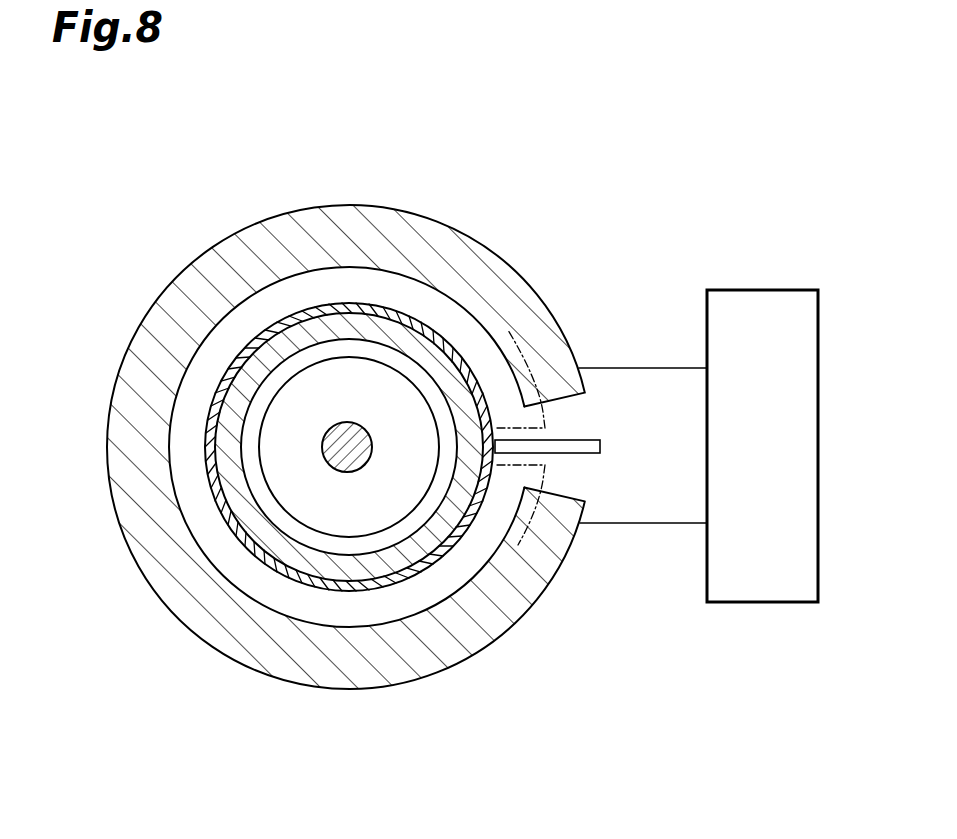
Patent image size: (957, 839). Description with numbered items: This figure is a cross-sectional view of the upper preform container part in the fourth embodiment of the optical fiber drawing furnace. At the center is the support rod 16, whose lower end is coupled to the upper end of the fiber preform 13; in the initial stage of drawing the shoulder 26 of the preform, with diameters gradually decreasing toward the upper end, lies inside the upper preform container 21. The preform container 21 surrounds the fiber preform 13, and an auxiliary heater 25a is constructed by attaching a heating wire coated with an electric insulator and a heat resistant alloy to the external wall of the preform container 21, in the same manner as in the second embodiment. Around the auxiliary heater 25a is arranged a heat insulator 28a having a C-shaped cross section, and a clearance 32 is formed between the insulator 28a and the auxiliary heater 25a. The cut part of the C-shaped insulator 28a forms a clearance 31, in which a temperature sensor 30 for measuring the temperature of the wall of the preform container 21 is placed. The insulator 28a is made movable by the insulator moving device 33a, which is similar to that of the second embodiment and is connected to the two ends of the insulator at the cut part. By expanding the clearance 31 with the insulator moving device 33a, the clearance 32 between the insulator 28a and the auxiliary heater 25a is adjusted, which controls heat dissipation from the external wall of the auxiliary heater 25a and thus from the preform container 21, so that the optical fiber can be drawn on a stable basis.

The fiber preform 13 is at (285, 520).
The support rod 16 is at (352, 458).
The preform container 21 is at (433, 358).
The auxiliary heater 25a is at (248, 352).
The shoulder 26 is at (320, 520).
The heat insulator 28a is at (394, 245).
The temperature sensor 30 is at (583, 445).
The clearance 31 is at (540, 485).
The clearance 32 is at (190, 443).
The insulator moving device 33a is at (755, 290).